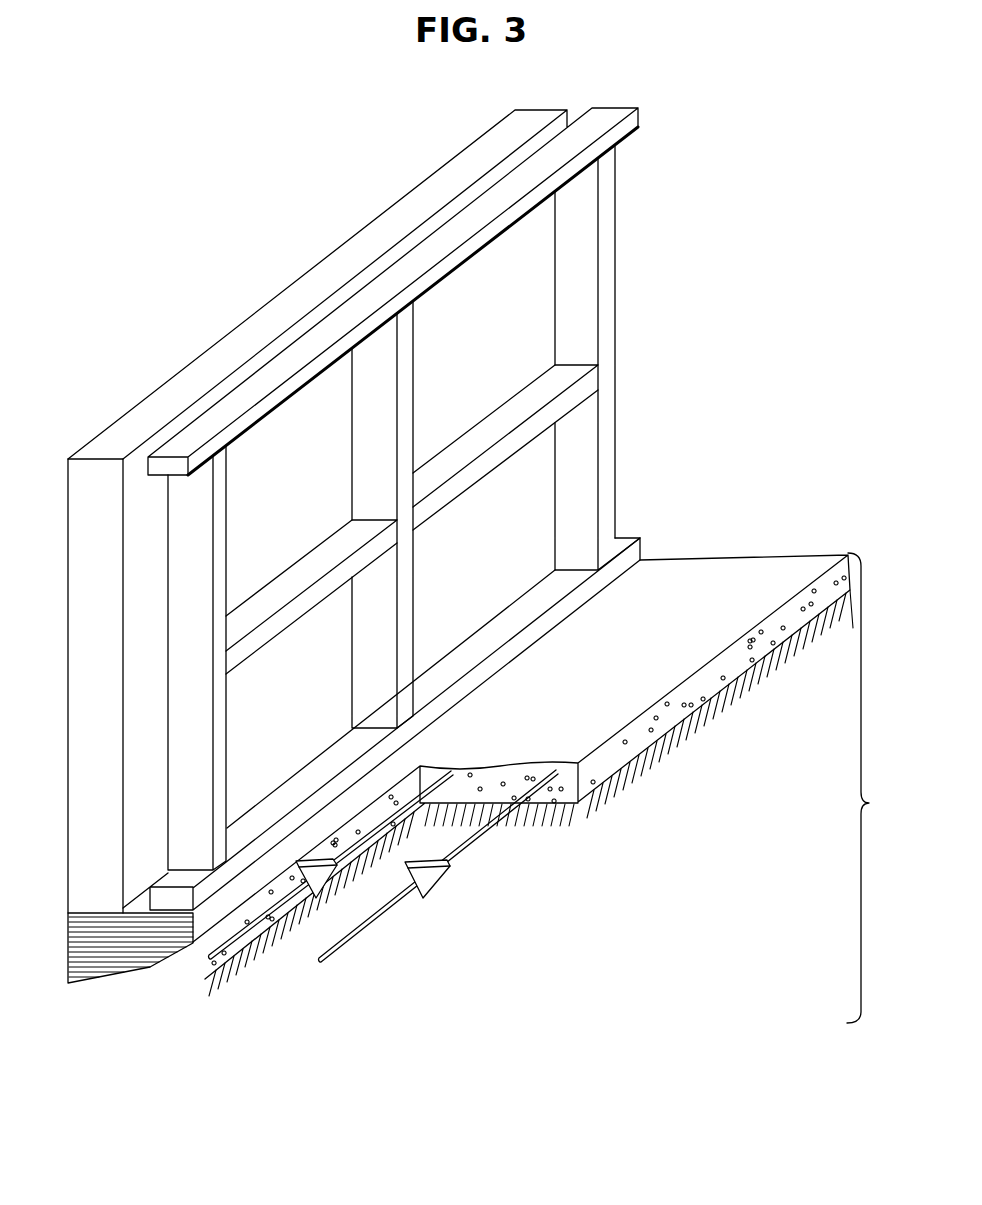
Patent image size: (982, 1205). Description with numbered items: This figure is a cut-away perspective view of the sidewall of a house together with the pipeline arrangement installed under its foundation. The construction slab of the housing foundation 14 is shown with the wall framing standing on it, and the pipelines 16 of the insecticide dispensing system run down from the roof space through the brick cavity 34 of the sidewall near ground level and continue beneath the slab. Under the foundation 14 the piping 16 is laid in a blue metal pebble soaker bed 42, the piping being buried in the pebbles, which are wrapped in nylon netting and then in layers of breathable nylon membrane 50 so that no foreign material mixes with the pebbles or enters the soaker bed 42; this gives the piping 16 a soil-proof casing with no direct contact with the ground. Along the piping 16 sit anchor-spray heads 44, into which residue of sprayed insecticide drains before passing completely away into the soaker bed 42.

The housing foundation 14 is at (711, 597).
The pipelines 16 is at (372, 920).
The brick cavity 34 is at (138, 495).
The blue metal pebble soaker bed 42 is at (879, 788).
The anchor-spray head 44 is at (328, 888).
The breathable nylon membrane 50 is at (670, 752).